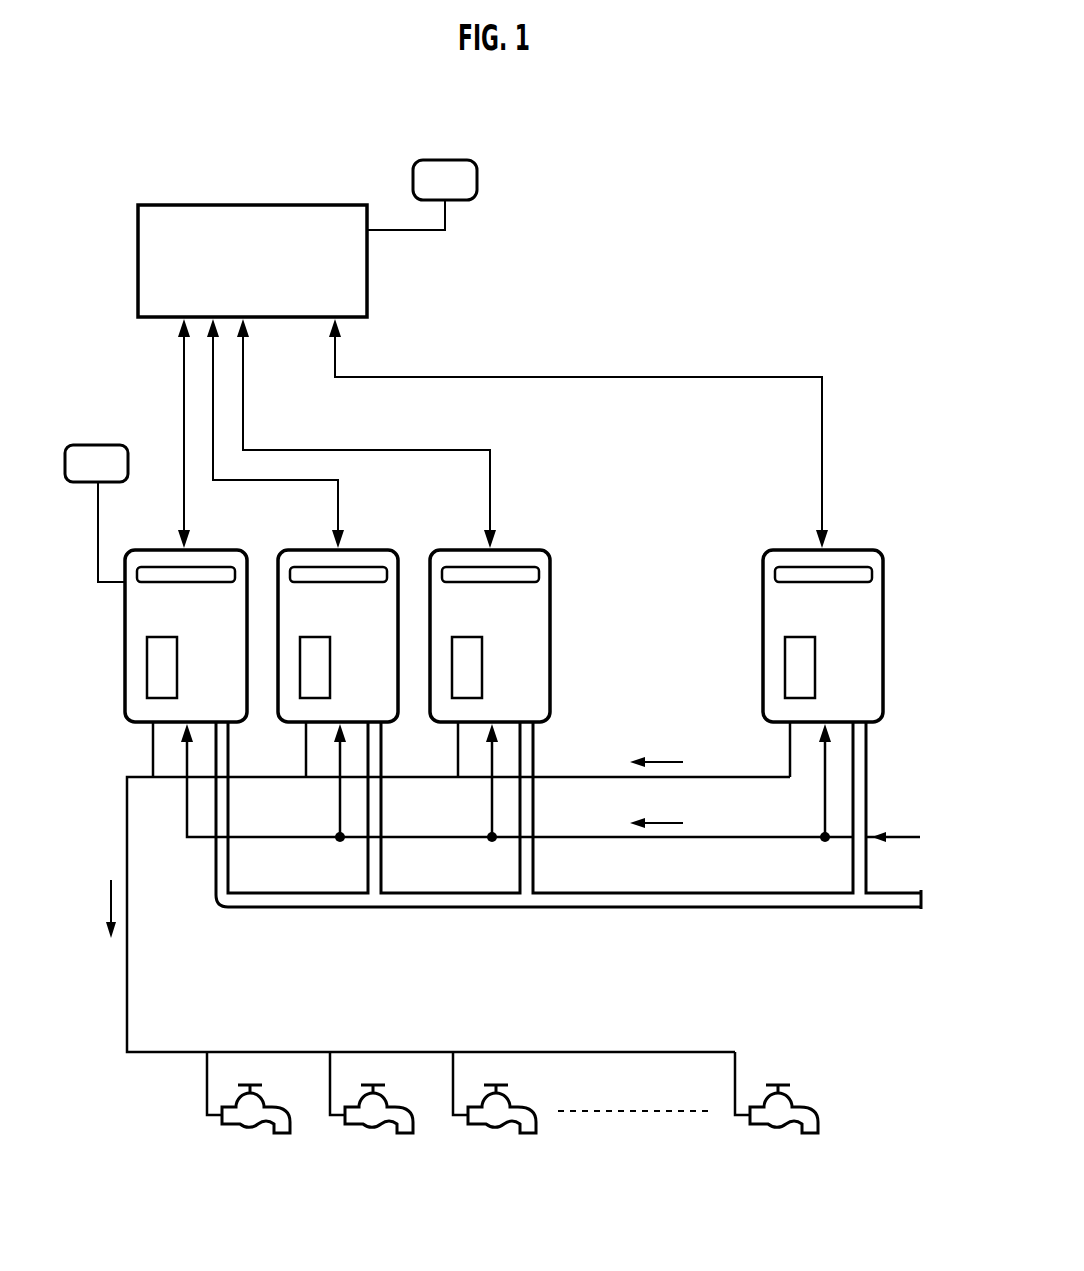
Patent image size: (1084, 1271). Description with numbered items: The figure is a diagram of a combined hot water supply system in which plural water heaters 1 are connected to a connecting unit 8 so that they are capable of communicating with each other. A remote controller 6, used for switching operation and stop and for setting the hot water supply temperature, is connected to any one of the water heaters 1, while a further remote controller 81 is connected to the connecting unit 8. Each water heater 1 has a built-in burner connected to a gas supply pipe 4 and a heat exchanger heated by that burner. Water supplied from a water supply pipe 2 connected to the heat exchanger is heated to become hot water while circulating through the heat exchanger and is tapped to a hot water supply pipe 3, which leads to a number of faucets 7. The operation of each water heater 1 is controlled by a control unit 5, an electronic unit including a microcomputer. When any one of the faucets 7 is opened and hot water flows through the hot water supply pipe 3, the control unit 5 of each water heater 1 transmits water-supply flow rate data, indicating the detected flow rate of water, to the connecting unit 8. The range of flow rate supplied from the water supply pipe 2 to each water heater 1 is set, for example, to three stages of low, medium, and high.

The water heater 1 is at (210, 549).
The water supply pipe 2 is at (187, 810).
The hot water supply pipe 3 is at (153, 750).
The gas supply pipe 4 is at (230, 865).
The control unit 5 is at (177, 667).
The remote controller 6 is at (100, 444).
The faucet 7 is at (254, 1131).
The connecting unit 8 is at (310, 204).
The remote controller 81 is at (450, 159).